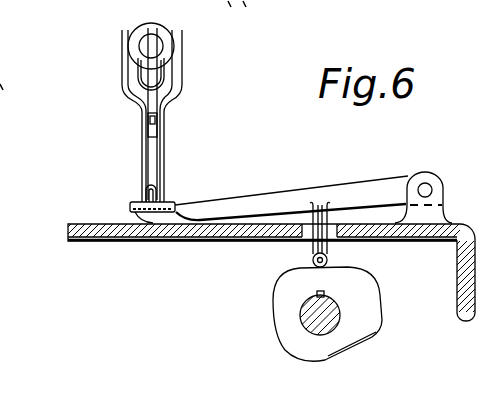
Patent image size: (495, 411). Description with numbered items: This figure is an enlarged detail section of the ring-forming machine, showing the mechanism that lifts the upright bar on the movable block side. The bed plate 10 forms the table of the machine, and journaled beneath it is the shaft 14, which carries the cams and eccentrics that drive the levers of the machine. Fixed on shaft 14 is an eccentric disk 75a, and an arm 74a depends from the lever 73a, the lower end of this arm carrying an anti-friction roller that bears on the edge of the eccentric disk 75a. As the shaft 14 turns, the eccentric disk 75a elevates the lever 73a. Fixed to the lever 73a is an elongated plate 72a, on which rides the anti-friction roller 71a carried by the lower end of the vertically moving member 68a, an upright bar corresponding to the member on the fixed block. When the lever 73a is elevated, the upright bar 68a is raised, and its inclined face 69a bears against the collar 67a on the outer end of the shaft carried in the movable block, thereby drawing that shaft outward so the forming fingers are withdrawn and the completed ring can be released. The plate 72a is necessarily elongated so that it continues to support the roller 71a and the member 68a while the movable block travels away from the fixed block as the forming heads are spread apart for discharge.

The bed plate 10 is at (108, 237).
The shaft 14 is at (342, 317).
The collar 67a is at (147, 23).
The vertically moving member 68a is at (152, 152).
The inclined face 69a is at (132, 75).
The anti-friction roller 71a is at (148, 188).
The elongated plate 72a is at (172, 203).
The lever 73a is at (258, 203).
The depending arm 74a is at (314, 252).
The eccentric disk 75a is at (287, 332).